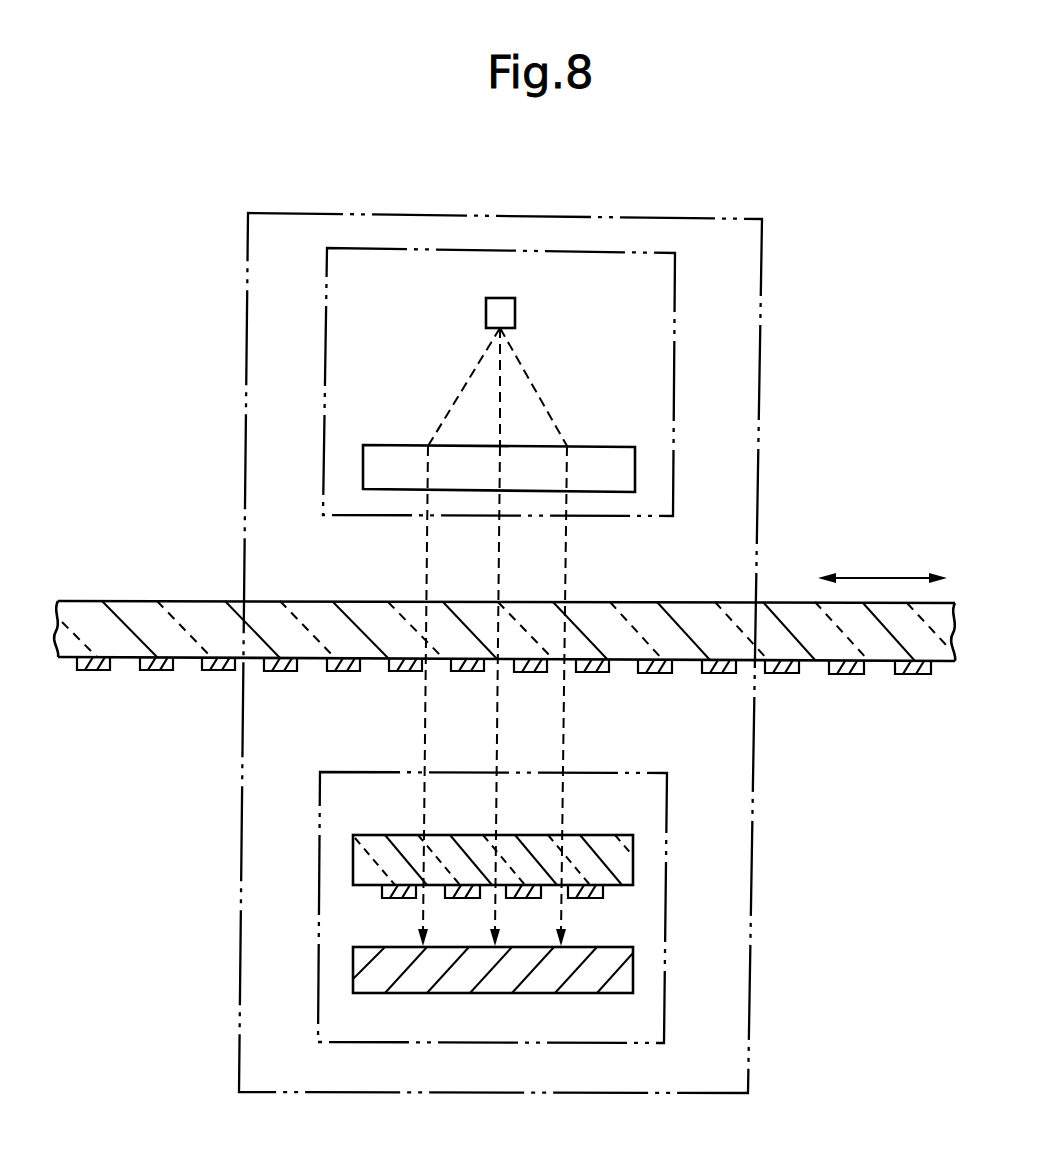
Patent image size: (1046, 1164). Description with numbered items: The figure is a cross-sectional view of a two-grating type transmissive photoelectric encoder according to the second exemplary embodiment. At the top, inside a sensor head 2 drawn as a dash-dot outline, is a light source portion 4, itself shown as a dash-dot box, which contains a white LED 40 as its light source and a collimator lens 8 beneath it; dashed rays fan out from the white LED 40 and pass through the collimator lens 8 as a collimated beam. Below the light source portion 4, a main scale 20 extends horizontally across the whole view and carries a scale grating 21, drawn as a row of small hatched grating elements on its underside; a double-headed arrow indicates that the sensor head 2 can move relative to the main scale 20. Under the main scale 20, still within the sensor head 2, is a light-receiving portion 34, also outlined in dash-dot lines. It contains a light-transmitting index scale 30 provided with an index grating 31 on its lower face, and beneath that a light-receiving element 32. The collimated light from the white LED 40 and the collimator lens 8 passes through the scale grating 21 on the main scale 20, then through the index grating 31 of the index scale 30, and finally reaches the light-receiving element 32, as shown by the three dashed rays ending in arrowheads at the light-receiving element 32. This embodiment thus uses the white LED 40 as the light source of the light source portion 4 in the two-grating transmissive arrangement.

The sensor head 2 is at (551, 218).
The light source portion 4 is at (673, 413).
The collimator lens 8 is at (605, 446).
The main scale 20 is at (102, 600).
The scale grating 21 is at (156, 672).
The index scale 30 is at (370, 835).
The index grating 31 is at (596, 898).
The light-receiving element 32 is at (360, 947).
The light-receiving portion 34 is at (648, 772).
The white LED 40 is at (515, 313).